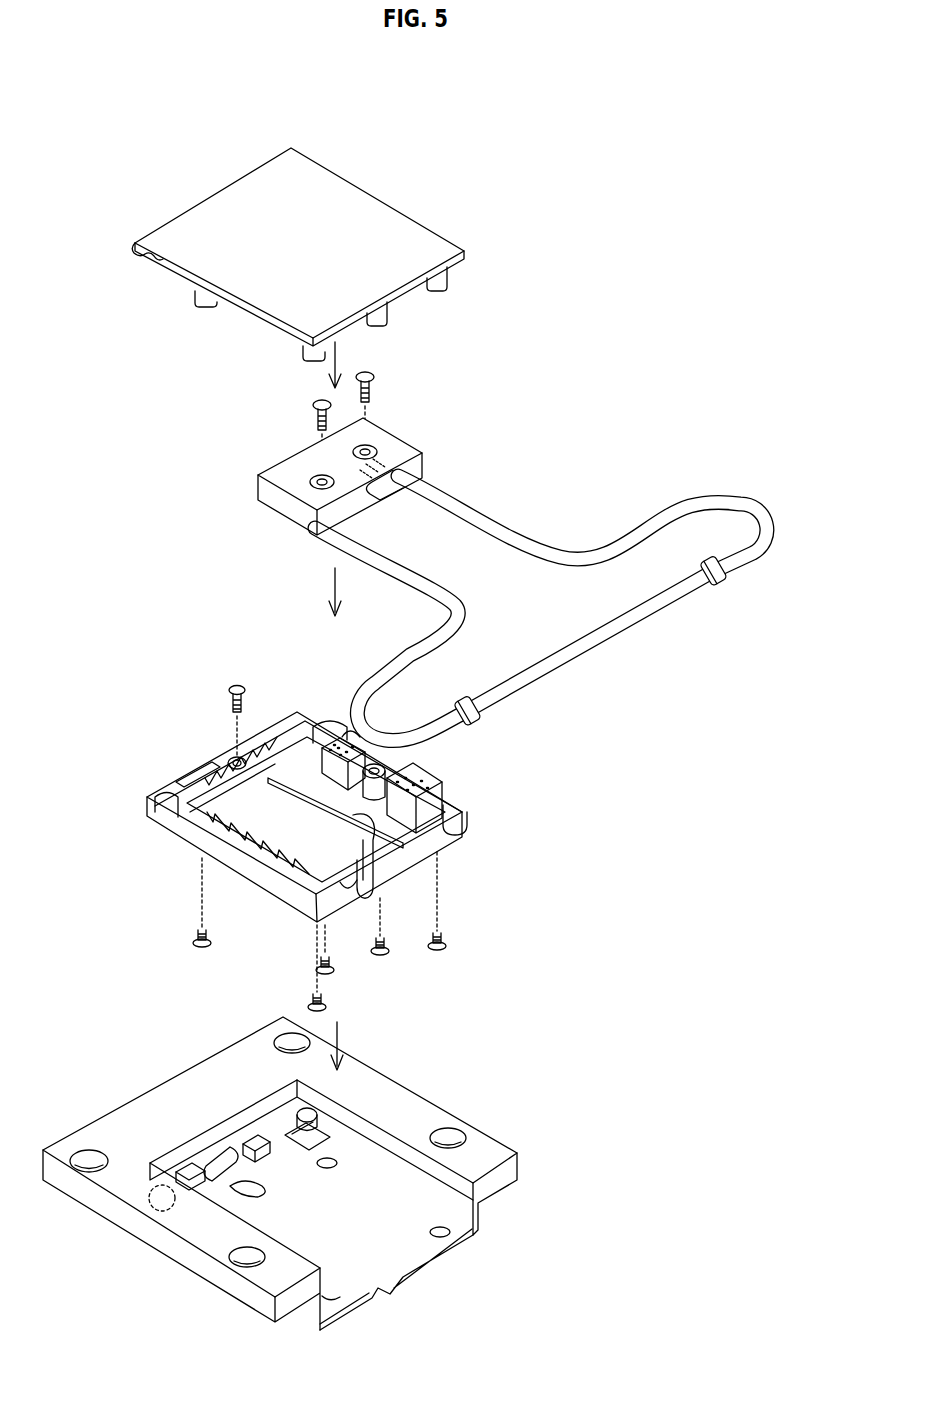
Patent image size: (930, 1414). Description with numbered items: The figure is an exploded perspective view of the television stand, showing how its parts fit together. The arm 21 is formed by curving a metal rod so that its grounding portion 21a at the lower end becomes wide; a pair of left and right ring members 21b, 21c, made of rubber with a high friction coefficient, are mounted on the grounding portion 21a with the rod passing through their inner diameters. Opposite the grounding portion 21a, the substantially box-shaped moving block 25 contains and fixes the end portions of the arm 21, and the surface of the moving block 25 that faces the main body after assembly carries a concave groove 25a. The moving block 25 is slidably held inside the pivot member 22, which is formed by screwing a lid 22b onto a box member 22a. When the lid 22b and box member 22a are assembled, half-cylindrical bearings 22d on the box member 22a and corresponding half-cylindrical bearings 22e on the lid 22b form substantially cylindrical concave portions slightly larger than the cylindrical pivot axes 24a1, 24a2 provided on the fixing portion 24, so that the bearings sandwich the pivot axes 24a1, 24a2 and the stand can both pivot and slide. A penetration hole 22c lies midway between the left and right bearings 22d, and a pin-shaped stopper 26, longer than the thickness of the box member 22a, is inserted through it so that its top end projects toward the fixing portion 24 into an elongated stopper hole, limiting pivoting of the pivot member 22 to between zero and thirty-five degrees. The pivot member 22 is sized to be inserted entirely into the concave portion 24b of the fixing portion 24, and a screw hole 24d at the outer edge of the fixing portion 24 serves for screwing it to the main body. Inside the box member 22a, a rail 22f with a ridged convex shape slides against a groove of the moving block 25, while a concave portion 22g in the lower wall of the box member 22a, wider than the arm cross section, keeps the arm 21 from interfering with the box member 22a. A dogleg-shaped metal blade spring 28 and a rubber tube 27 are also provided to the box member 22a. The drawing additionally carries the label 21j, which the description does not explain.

The arm 21 is at (480, 520).
The grounding portion 21a is at (603, 637).
The ring member 21b is at (725, 585).
The ring member 21c is at (487, 703).
The cable end terminal 21j is at (362, 765).
The pivot member 22 is at (292, 253).
The box member 22a is at (463, 825).
The lid 22b is at (372, 247).
The penetration hole 22c is at (225, 757).
The half-cylindrical bearing 22d is at (312, 723).
The half-cylindrical bearing 22e is at (305, 150).
The rail 22f is at (377, 790).
The concave portion 22g is at (378, 895).
The fixing portion 24 is at (317, 1169).
The pivot axis 24a1 is at (299, 1123).
The pivot axis 24a2 is at (150, 1207).
The concave portion 24b is at (382, 1226).
The screw hole 24d is at (243, 1253).
The moving block 25 is at (330, 469).
The concave groove 25a is at (400, 470).
The stopper 26 is at (237, 680).
The rubber tube 27 is at (388, 770).
The blade spring 28 is at (458, 812).